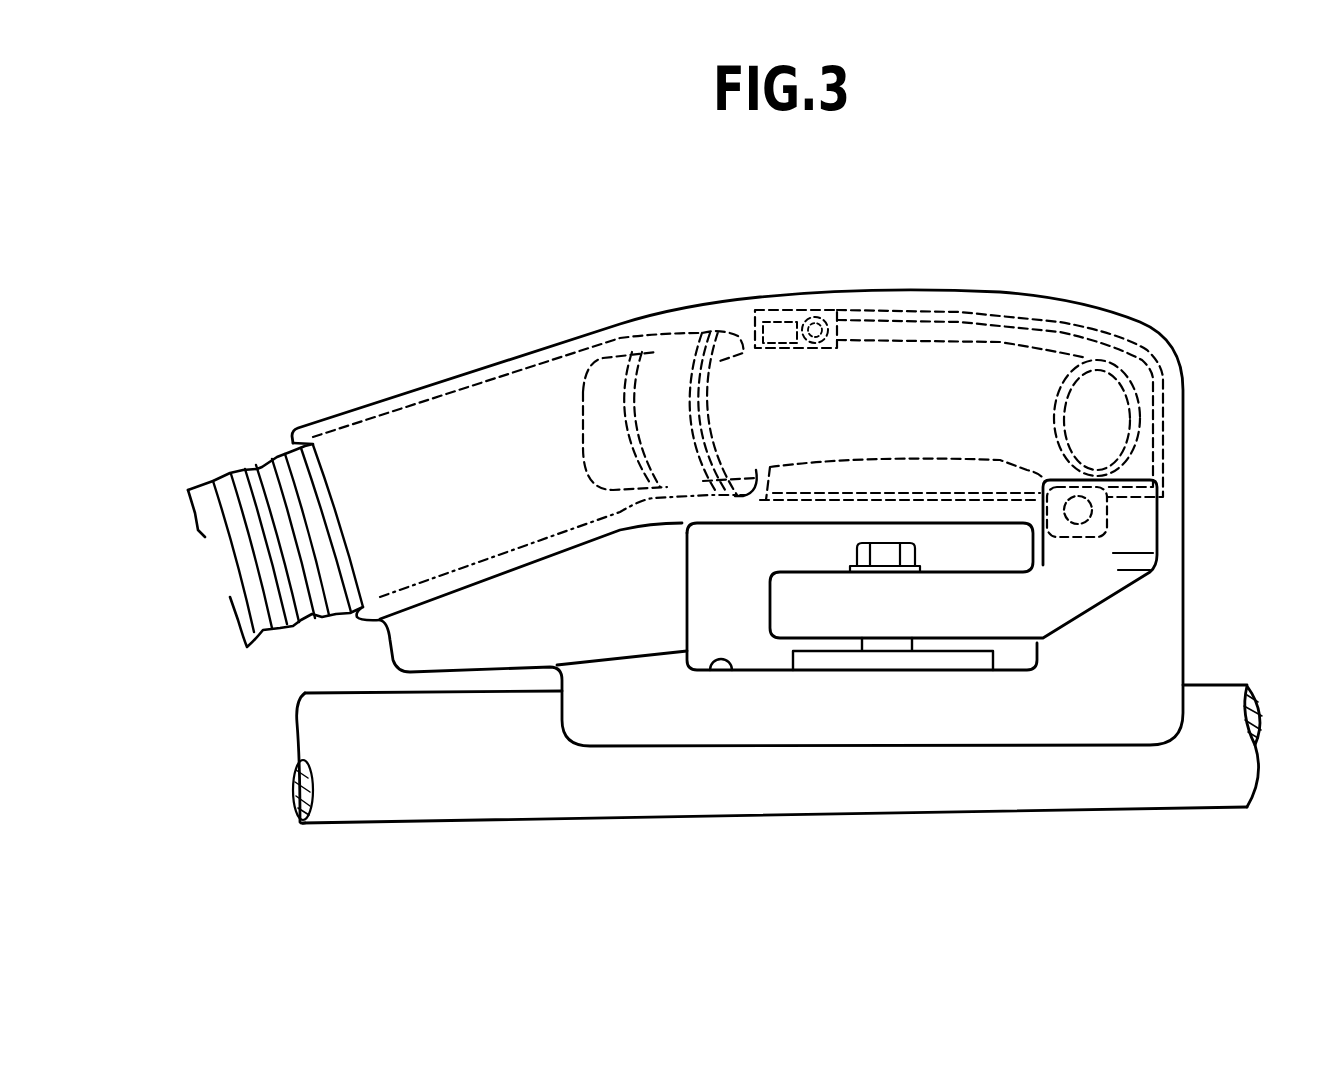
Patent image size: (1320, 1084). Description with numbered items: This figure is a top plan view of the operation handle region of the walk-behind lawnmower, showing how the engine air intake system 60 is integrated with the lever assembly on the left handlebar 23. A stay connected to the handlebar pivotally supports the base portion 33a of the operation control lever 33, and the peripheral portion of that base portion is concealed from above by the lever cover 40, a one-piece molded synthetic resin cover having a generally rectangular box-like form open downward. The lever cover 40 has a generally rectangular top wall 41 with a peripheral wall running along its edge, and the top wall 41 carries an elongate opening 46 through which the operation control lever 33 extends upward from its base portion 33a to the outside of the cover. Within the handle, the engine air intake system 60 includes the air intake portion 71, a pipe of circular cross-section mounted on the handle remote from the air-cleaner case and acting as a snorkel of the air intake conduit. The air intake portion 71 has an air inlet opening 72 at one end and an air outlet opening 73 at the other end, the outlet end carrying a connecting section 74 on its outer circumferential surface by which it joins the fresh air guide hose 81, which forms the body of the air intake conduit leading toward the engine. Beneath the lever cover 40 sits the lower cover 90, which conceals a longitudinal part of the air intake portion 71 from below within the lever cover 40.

The left handlebar 23 is at (453, 803).
The operation control lever 33 is at (1080, 590).
The base portion 33a is at (942, 625).
The lever cover 40 is at (421, 377).
The top wall 41 is at (626, 628).
The elongate opening 46 is at (732, 670).
The engine air intake system 60 is at (210, 472).
The air intake portion 71 is at (992, 335).
The air inlet opening 72 is at (1088, 362).
The air outlet opening 73 is at (583, 387).
The connecting section 74 is at (667, 352).
The fresh air guide hose 81 is at (258, 467).
The lower cover 90 is at (918, 296).